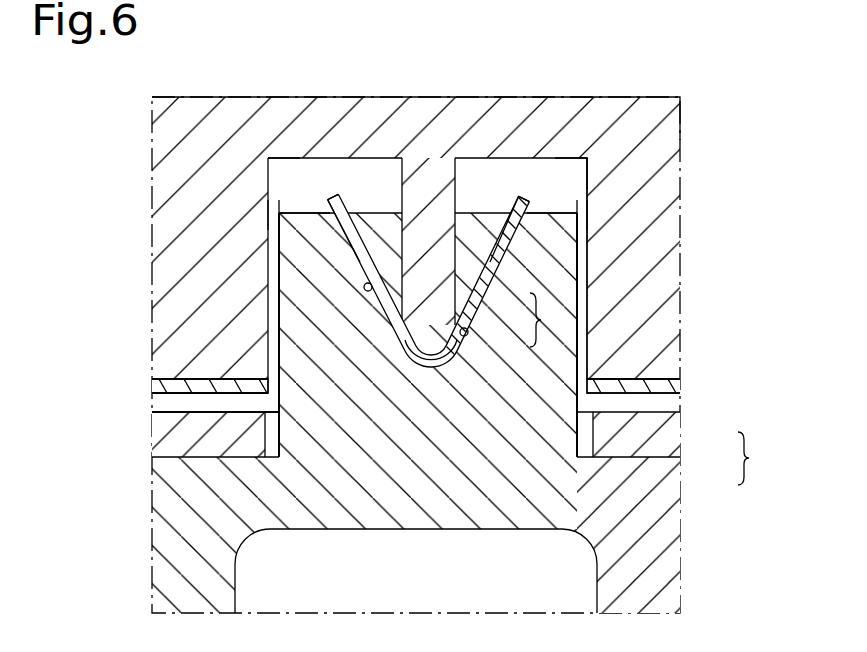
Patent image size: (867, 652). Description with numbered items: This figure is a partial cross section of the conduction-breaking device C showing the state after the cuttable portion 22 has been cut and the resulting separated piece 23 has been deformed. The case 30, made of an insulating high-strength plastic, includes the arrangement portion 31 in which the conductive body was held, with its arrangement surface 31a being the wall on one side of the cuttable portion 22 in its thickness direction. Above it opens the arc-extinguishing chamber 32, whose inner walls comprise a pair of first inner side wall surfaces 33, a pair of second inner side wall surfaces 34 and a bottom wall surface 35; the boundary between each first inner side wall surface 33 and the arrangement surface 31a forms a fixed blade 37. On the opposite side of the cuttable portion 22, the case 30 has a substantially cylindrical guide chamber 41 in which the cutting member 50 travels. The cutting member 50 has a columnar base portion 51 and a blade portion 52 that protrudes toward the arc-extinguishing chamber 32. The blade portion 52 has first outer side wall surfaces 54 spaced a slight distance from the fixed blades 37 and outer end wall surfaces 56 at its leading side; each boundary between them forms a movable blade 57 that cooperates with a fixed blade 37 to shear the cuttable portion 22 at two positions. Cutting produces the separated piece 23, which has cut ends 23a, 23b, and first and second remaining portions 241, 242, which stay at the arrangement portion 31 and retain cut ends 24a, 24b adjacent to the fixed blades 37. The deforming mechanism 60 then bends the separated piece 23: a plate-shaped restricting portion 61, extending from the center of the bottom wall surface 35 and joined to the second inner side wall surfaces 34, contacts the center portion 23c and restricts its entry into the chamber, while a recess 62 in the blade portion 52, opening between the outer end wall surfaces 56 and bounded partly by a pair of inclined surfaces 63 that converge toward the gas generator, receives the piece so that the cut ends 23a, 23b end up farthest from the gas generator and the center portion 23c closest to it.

The case 30 is at (668, 136).
The arc-extinguishing chamber 32 is at (386, 199).
The first inner side wall surfaces 33 is at (276, 160).
The second inner side wall surfaces 34 is at (580, 197).
The bottom wall surface 35 is at (342, 162).
The fixed blade 37 is at (270, 374).
The guide chamber 41 is at (165, 466).
The cutting member 50 is at (760, 458).
The base portion 51 is at (667, 466).
The blade portion 52 is at (578, 430).
The first outer side wall surfaces 54 is at (266, 458).
The outer end wall surfaces 56 is at (304, 216).
The movable blade 57 is at (278, 208).
The deforming mechanism 60 is at (550, 320).
The restricting portion 61 is at (440, 297).
The recess 62 is at (468, 333).
The inclined surfaces 63 is at (364, 287).
The separated piece 23 is at (500, 240).
The cut end 23a is at (335, 197).
The cut end 23b is at (523, 198).
The center portion 23c is at (428, 365).
The cut end 24a is at (279, 388).
The cut end 24b is at (578, 388).
The first remaining portion 241 is at (160, 380).
The second remaining portion 242 is at (600, 383).
The cuttable portion 22 is at (411, 387).
The arrangement surface 31a is at (155, 398).
The arrangement portion 31 is at (182, 414).
The conduction-breaking device C is at (727, 88).